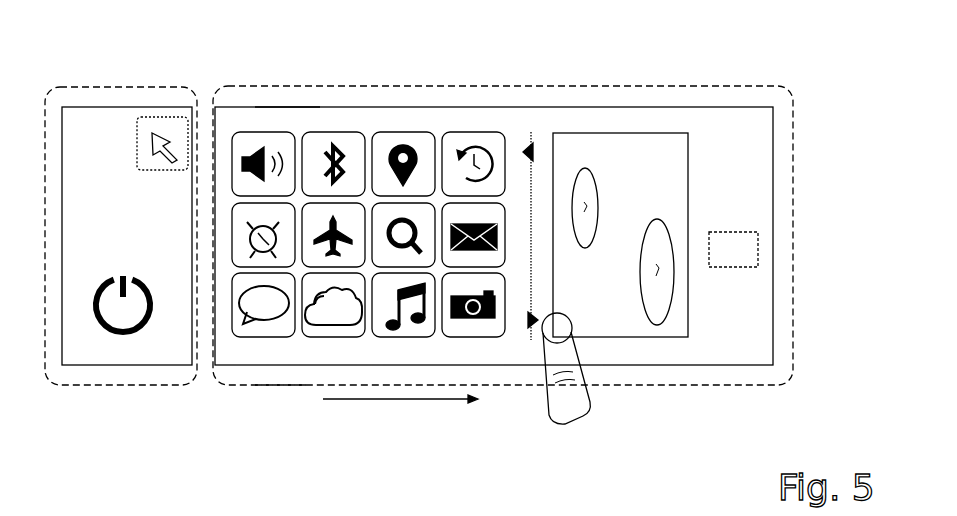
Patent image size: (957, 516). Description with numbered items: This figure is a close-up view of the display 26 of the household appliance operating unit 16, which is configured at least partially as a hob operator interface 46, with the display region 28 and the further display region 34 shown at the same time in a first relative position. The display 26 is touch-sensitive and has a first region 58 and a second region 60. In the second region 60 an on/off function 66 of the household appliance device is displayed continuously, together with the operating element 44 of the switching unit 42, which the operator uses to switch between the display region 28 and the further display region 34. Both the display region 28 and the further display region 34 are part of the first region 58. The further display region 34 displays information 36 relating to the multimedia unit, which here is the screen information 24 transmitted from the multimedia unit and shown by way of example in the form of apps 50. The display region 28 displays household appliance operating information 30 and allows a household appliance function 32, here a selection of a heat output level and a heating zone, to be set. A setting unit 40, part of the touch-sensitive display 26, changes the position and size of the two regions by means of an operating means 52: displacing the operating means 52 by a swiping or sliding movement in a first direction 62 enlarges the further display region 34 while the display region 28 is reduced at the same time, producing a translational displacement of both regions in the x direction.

The household appliance operating unit 16 is at (633, 98).
The screen information 24 is at (337, 98).
The display 26 is at (518, 106).
The display region 28 is at (667, 378).
The household appliance operating information 30 is at (777, 243).
The household appliance function 32 is at (776, 167).
The further display region 34 is at (280, 377).
The information relating to the multimedia unit 36 is at (288, 103).
The setting unit 40 is at (520, 378).
The switching unit 42 is at (177, 101).
The operating element 44 is at (162, 116).
The hob operator interface 46 is at (735, 106).
The apps 50 is at (450, 135).
The operating means 52 is at (531, 180).
The first region 58 is at (247, 388).
The second region 60 is at (177, 388).
The first direction 62 is at (407, 402).
The on/off function 66 is at (120, 338).